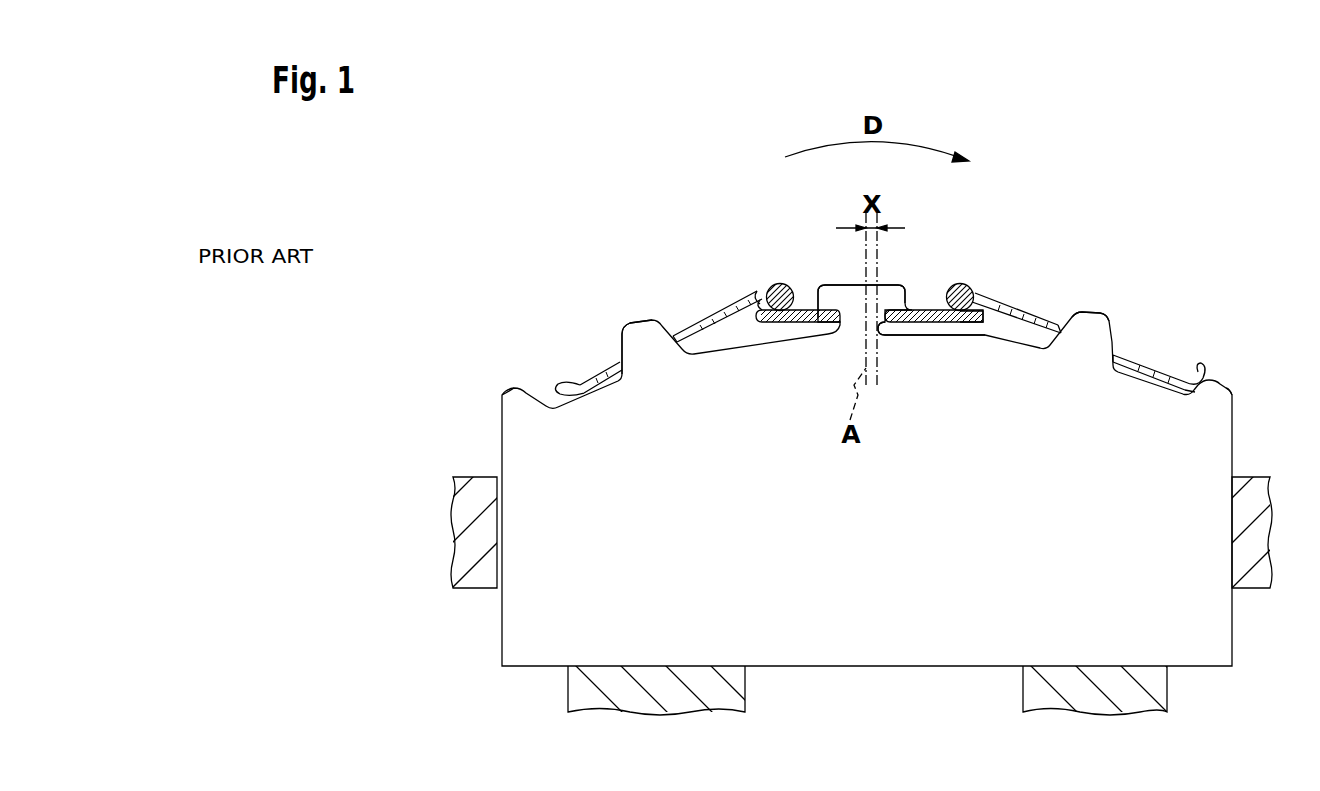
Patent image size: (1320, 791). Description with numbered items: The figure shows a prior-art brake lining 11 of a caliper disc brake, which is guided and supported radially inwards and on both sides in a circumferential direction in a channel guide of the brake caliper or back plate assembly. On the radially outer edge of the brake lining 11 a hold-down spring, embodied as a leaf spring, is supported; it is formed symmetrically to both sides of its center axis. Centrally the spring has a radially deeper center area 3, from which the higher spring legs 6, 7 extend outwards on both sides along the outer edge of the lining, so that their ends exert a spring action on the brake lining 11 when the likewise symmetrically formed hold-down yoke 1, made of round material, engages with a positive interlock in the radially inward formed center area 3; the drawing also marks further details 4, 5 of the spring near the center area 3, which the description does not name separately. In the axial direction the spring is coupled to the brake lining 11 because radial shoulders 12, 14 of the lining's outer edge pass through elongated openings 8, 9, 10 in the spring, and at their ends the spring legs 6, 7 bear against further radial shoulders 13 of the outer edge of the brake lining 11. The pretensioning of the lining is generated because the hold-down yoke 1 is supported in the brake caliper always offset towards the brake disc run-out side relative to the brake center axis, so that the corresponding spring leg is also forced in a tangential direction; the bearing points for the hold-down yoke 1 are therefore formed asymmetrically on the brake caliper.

The hold-down yoke 1 is at (781, 266).
The center area 3 is at (945, 323).
The spring end 4 is at (752, 291).
The plate section 5 is at (1000, 322).
The spring leg 6 is at (586, 383).
The spring leg 7 is at (1180, 378).
The elongated opening 8 is at (700, 318).
The elongated opening 9 is at (1030, 311).
The elongated opening 10 is at (908, 330).
The brake lining 11 is at (1218, 637).
The radial shoulder 12 is at (643, 328).
The radial shoulder 13 is at (505, 393).
The radial shoulder 14 is at (890, 297).